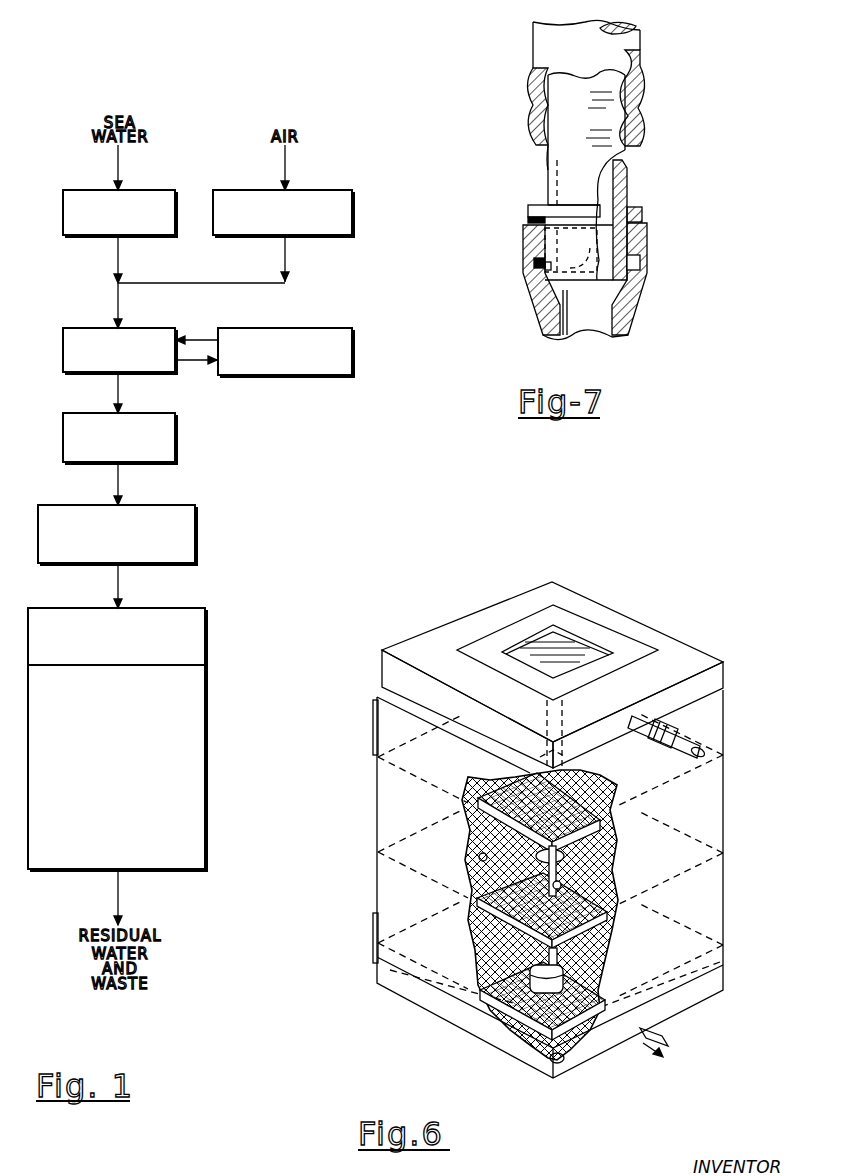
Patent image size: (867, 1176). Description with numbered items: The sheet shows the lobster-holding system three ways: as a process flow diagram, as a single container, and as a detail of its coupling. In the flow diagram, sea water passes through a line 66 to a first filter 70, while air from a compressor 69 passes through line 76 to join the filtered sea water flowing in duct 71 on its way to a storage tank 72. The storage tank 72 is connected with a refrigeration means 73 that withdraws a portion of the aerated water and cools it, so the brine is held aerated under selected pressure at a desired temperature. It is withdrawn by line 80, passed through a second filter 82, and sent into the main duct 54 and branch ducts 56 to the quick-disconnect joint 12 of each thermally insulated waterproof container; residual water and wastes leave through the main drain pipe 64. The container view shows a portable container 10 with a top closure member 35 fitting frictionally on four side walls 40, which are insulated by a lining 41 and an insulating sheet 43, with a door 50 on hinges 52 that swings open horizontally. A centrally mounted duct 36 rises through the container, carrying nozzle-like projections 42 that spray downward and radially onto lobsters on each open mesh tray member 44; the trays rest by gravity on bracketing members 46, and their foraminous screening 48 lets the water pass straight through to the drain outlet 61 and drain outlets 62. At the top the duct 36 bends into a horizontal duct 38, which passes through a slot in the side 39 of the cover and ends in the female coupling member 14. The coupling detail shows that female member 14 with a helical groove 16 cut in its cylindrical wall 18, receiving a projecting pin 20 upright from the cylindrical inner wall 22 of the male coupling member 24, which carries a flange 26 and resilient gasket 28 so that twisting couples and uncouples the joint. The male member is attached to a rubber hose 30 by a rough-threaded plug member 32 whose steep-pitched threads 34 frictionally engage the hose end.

In FIG. 6, the portable container 10 is at (678, 629).
In FIG. 1, the quick-disconnect coupling member 12 is at (191, 612).
In FIG. 7, the quick-disconnect coupling member 12 is at (690, 187).
In FIG. 6, the quick-disconnect coupling member 12 is at (686, 720).
In FIG. 7, the female coupling member 14 is at (654, 258).
In FIG. 6, the female coupling member 14 is at (655, 738).
In FIG. 7, the helical groove 16 is at (541, 263).
In FIG. 7, the cylindrical wall 18 is at (642, 272).
In FIG. 7, the projecting pin 20 is at (541, 268).
In FIG. 7, the cylindrical inner wall 22 is at (530, 230).
In FIG. 7, the male coupling member 24 is at (649, 234).
In FIG. 7, the flange 26 is at (633, 203).
In FIG. 7, the resilient gasket 28 is at (637, 216).
In FIG. 7, the rubber hose 30 is at (634, 108).
In FIG. 7, the rough-threaded plug member 32 is at (640, 126).
In FIG. 7, the steep-pitched threads 34 is at (640, 80).
In FIG. 6, the top closure member 35 is at (695, 652).
In FIG. 6, the duct 36 is at (560, 857).
In FIG. 6, the horizontal duct 38 is at (603, 697).
In FIG. 6, the side of the cover 39 is at (719, 680).
In FIG. 6, the side walls 40 is at (380, 690).
In FIG. 6, the lining 41 is at (480, 857).
In FIG. 6, the nozzle-like projections 42 is at (550, 886).
In FIG. 6, the insulating sheet 43 is at (597, 1012).
In FIG. 6, the tray member 44 is at (598, 898).
In FIG. 6, the bracketing members 46 is at (380, 780).
In FIG. 6, the foraminous screening 48 is at (608, 879).
In FIG. 6, the door 50 is at (390, 822).
In FIG. 6, the hinges 52 is at (373, 720).
In FIG. 1, the main duct 54 is at (172, 506).
In FIG. 1, the branch ducts 56 is at (120, 597).
In FIG. 6, the drain outlet 61 is at (529, 978).
In FIG. 6, the drain outlets 62 is at (598, 978).
In FIG. 1, the main drain pipe 64 is at (120, 899).
In FIG. 1, the line 66 is at (118, 168).
In FIG. 1, the compressor 69 is at (336, 192).
In FIG. 1, the first filter 70 is at (159, 192).
In FIG. 1, the duct 71 is at (120, 262).
In FIG. 1, the storage tank 72 is at (157, 330).
In FIG. 1, the refrigeration means 73 is at (336, 330).
In FIG. 1, the line 76 is at (287, 262).
In FIG. 1, the line 80 is at (120, 400).
In FIG. 1, the second filter 82 is at (164, 418).